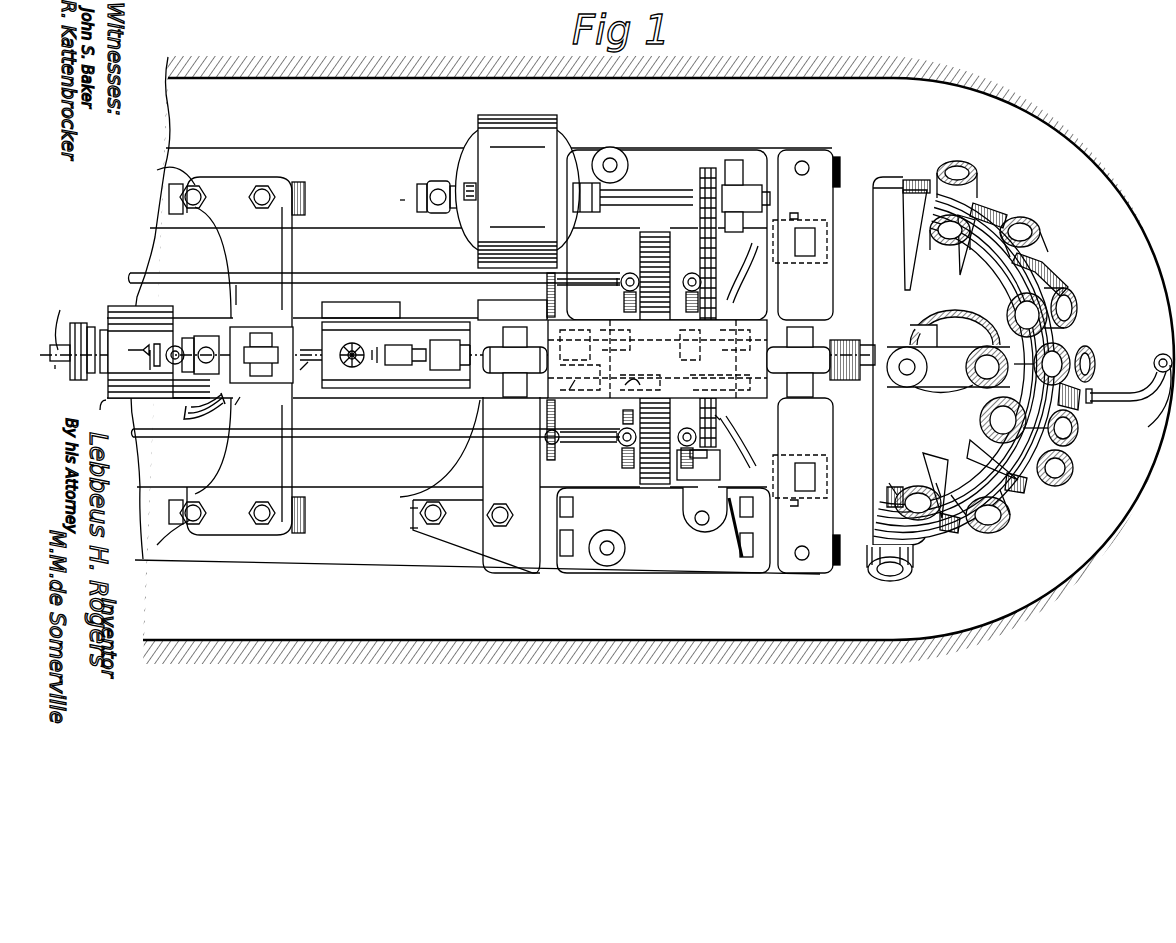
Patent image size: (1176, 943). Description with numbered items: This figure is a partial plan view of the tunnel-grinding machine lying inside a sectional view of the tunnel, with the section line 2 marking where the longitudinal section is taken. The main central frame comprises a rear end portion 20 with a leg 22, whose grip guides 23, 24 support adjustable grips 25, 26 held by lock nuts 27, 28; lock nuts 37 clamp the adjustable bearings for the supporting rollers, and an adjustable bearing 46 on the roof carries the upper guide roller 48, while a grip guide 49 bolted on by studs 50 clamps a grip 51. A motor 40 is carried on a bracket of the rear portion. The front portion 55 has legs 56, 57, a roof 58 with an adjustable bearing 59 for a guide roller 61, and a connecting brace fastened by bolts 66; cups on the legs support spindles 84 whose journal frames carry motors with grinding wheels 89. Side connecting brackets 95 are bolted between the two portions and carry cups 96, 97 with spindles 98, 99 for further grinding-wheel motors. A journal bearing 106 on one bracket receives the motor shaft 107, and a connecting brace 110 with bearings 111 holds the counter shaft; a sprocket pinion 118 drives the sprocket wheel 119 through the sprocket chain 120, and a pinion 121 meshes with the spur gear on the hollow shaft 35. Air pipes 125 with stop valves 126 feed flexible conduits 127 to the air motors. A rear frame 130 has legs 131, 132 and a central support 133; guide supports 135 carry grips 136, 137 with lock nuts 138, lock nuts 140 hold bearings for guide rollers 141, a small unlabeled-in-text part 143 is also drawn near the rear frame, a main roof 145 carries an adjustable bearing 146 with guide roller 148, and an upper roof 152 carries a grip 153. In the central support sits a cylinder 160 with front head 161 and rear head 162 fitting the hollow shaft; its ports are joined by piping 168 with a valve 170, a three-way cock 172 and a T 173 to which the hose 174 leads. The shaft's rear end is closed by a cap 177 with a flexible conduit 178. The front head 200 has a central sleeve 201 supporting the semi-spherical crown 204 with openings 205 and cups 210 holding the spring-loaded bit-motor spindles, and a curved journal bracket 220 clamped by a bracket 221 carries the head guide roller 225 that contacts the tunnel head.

The section line 2 is at (605, 368).
The rear end portion 20 is at (511, 485).
The leg 22 is at (496, 532).
The grip guide 23 is at (390, 205).
The grip guide 24 is at (395, 508).
The adjustable grip 25 is at (406, 182).
The adjustable grip 26 is at (395, 529).
The lock nut 27 is at (438, 189).
The lock nut 28 is at (445, 511).
The hollow shaft 35 is at (90, 323).
The lock nut 37 is at (490, 522).
The motor 40 is at (518, 191).
The adjustable bearing 46 is at (454, 448).
The upper guide roller 48 is at (515, 362).
The grip guide 49 is at (492, 338).
The stud 50 is at (460, 388).
The grip 51 is at (430, 340).
The front portion 55 is at (805, 235).
The leg 56 is at (799, 207).
The leg 57 is at (793, 513).
The roof 58 is at (837, 335).
The adjustable bearing 59 is at (805, 485).
The guide roller 61 is at (798, 362).
The bolt 66 is at (800, 359).
The spindle 84 is at (801, 559).
The grinding wheel 89 is at (842, 158).
The side connecting bracket 95 is at (697, 150).
The cup 96 is at (616, 580).
The cup 97 is at (706, 528).
The spindle 98 is at (608, 545).
The spindle 99 is at (695, 515).
The journal bearing 106 is at (746, 196).
The motor shaft 107 is at (672, 192).
The connecting brace 110 is at (657, 358).
The bearing 111 is at (586, 388).
The sprocket pinion 118 is at (695, 168).
The sprocket wheel 119 is at (736, 418).
The sprocket chain 120 is at (712, 302).
The pinion 121 is at (692, 355).
The air pipe 125 is at (408, 448).
The stop valve 126 is at (622, 443).
The flexible conduit 127 is at (547, 468).
The rear frame 130 is at (240, 316).
The leg 131 is at (230, 262).
The leg 132 is at (228, 446).
The central support 133 is at (361, 302).
The guide support 135 is at (158, 354).
The grip 136 is at (169, 197).
The grip 137 is at (169, 506).
The lock nut 138 is at (204, 510).
The lock nut 140 is at (254, 524).
The guide roller 141 is at (306, 517).
The pin 143 is at (314, 371).
The main roof 145 is at (414, 369).
The adjustable bearing 146 is at (291, 333).
The guide roller 148 is at (285, 356).
The upper roof 152 is at (172, 330).
The grip 153 is at (175, 347).
The cylinder 160 is at (396, 337).
The front head 161 is at (476, 381).
The rear head 162 is at (106, 414).
The piping 168 is at (377, 388).
The valve 170 is at (354, 343).
The threeway cock 172 is at (395, 345).
The T 173 is at (247, 292).
The flexible conduit 174 is at (185, 415).
The cap 177 is at (63, 365).
The flexible conduit 178 is at (60, 345).
The front head 200 is at (876, 250).
The central sleeve 201 is at (915, 335).
The semi-spherical crown 204 is at (954, 354).
The opening 205 is at (950, 457).
The cup 210 is at (910, 567).
The curved journal bracket 220 is at (1110, 402).
The bracket 221 is at (1083, 374).
The head guide roller 225 is at (1160, 354).